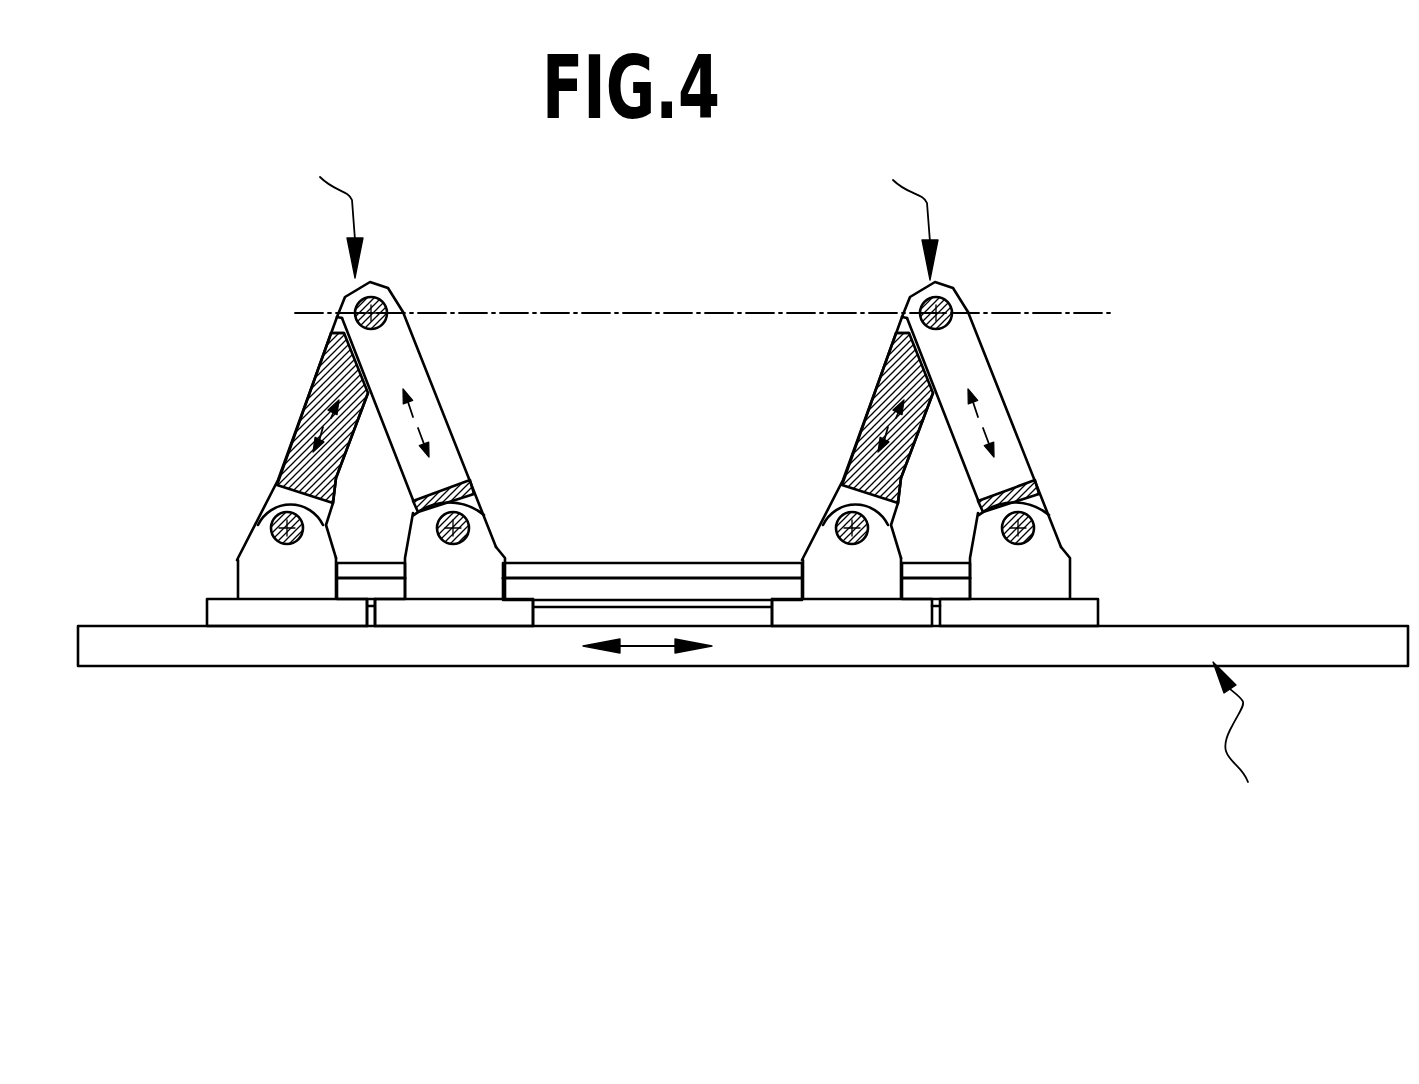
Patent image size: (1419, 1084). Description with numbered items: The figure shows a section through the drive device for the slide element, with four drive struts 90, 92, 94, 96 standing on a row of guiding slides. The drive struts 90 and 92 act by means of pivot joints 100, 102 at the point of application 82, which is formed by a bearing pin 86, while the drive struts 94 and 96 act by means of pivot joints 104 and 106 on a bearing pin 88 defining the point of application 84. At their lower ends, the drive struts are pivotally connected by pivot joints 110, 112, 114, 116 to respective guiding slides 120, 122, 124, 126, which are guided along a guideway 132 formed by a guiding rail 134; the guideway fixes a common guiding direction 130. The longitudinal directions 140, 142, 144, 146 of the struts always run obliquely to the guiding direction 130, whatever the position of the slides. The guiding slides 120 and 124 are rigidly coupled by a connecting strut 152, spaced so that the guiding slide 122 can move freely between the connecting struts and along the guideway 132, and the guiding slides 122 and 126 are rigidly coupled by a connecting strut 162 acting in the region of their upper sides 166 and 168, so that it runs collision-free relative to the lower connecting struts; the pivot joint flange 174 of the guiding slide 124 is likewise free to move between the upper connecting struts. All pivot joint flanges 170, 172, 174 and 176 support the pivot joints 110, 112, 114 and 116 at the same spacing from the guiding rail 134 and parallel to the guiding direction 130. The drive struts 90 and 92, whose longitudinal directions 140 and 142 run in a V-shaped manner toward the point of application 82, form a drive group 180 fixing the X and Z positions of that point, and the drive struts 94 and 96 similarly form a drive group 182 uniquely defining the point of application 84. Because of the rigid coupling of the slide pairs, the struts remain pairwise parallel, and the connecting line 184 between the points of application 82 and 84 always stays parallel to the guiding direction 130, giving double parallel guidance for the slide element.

The point of application 82 is at (385, 291).
The point of application 84 is at (965, 276).
The bearing pin 86 is at (386, 326).
The bearing pin 88 is at (970, 342).
The drive strut 90 is at (292, 457).
The drive strut 92 is at (450, 457).
The drive strut 94 is at (842, 438).
The drive strut 96 is at (1007, 429).
The pivot joint 100 is at (334, 327).
The pivot joint 102 is at (352, 296).
The pivot joint 104 is at (866, 412).
The pivot joint 106 is at (894, 272).
The pivot joint 110 is at (270, 527).
The pivot joint 112 is at (478, 522).
The pivot joint 114 is at (791, 518).
The pivot joint 116 is at (1078, 519).
The guiding slide 120 is at (207, 610).
The guiding slide 122 is at (493, 613).
The guiding slide 124 is at (785, 613).
The guiding slide 126 is at (1063, 614).
The guiding direction 130 is at (652, 650).
The guideway 132 is at (1347, 657).
The guiding rail 134 is at (1246, 745).
The longitudinal direction 140 is at (318, 420).
The longitudinal direction 142 is at (428, 417).
The longitudinal direction 144 is at (838, 414).
The longitudinal direction 146 is at (1029, 414).
The connecting strut 152 is at (376, 592).
The connecting strut 162 is at (650, 572).
The upper side 166 is at (500, 553).
The upper side 168 is at (1047, 574).
The pivot joint flange 170 is at (260, 567).
The pivot joint flange 172 is at (433, 568).
The pivot joint flange 174 is at (852, 626).
The pivot joint flange 176 is at (1020, 625).
The drive group 180 is at (328, 204).
The drive group 182 is at (902, 207).
The connecting line 184 is at (1067, 306).